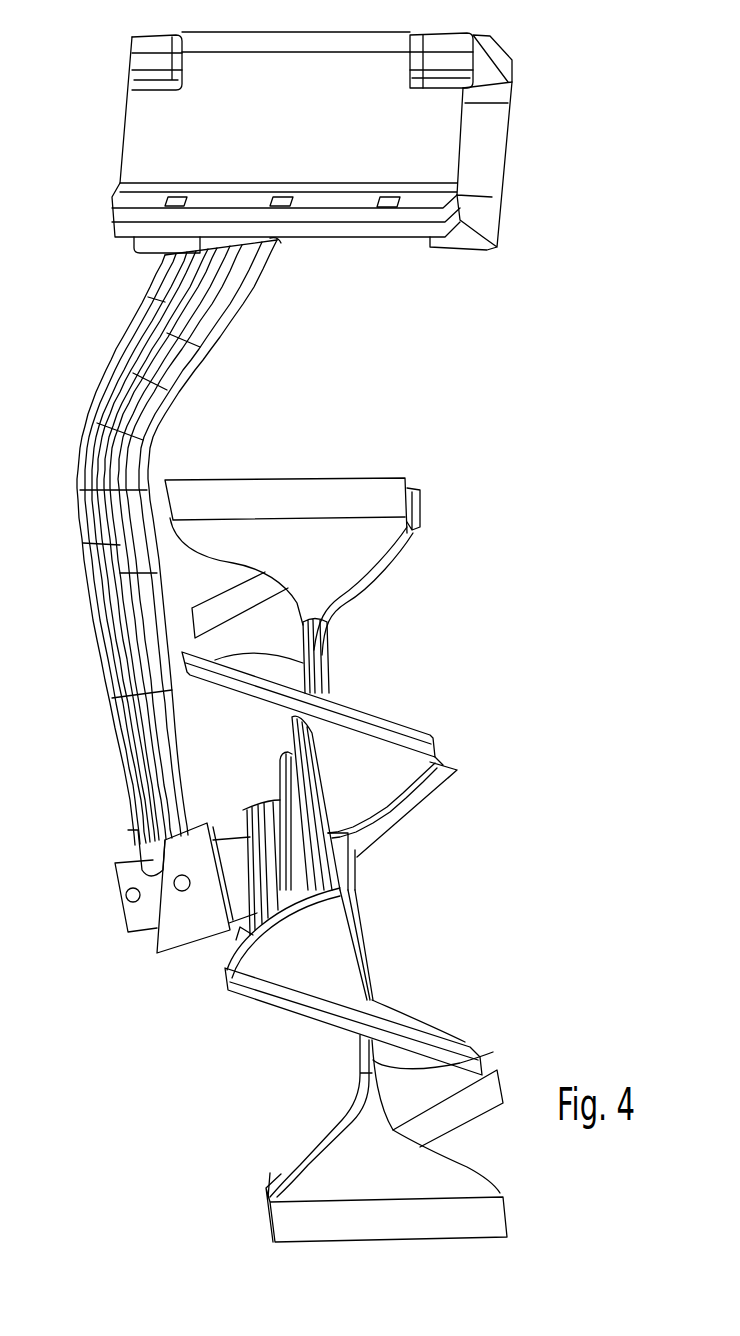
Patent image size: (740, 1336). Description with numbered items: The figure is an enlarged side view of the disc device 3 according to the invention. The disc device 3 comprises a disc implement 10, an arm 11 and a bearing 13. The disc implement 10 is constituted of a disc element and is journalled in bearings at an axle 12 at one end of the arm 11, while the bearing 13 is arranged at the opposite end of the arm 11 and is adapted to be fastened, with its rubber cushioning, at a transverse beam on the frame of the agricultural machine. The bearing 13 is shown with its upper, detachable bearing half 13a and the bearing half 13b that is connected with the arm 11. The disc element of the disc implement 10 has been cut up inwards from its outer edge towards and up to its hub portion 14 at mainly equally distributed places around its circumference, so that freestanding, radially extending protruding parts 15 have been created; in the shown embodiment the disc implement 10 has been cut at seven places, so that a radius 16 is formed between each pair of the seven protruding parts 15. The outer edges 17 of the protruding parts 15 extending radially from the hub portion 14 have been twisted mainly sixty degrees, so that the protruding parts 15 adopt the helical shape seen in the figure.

The disc device 3 is at (413, 797).
The disc implement 10 is at (387, 858).
The arm 11 is at (200, 353).
The axle 12 is at (357, 857).
The bearing 13 is at (331, 142).
The upper detachable bearing half 13a is at (132, 130).
The bearing half 13b is at (490, 177).
The hub portion 14 is at (355, 923).
The protruding parts 15 is at (375, 540).
The radius 16 is at (310, 655).
The outer edges 17 is at (365, 477).